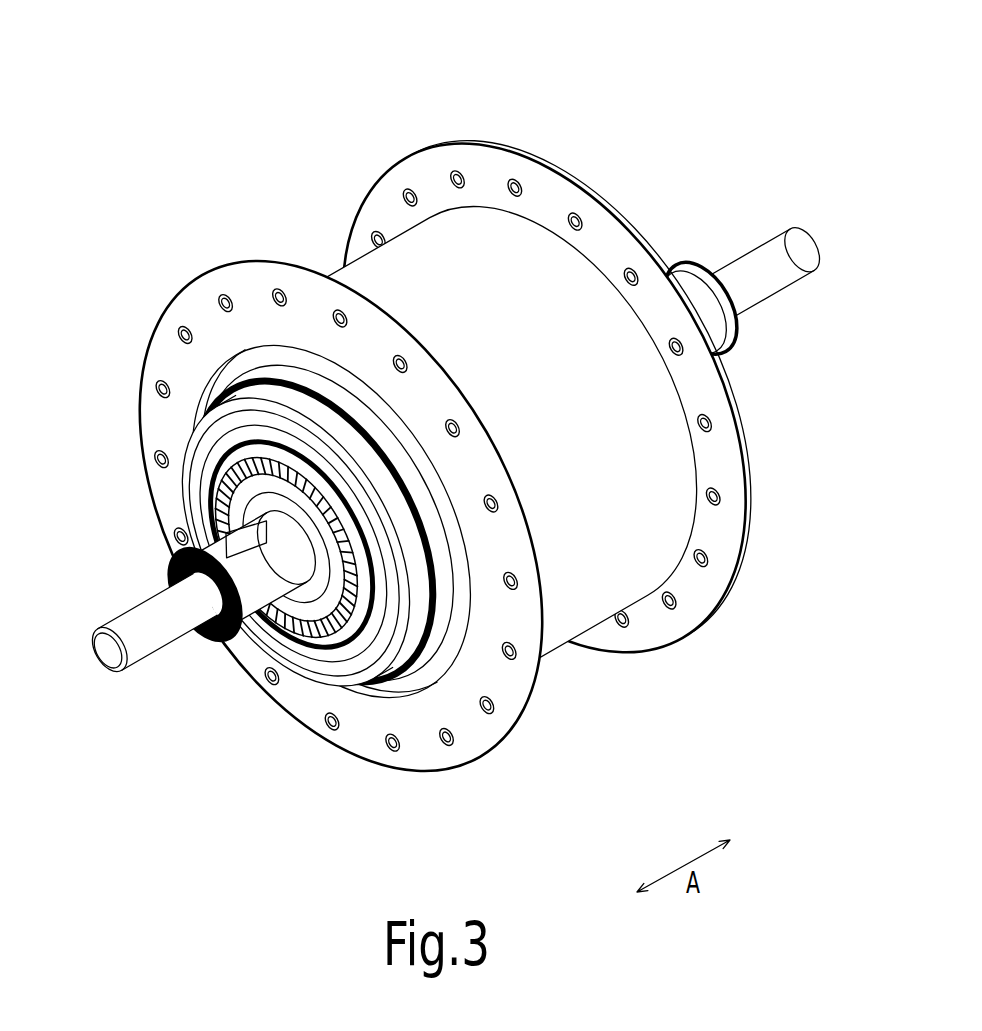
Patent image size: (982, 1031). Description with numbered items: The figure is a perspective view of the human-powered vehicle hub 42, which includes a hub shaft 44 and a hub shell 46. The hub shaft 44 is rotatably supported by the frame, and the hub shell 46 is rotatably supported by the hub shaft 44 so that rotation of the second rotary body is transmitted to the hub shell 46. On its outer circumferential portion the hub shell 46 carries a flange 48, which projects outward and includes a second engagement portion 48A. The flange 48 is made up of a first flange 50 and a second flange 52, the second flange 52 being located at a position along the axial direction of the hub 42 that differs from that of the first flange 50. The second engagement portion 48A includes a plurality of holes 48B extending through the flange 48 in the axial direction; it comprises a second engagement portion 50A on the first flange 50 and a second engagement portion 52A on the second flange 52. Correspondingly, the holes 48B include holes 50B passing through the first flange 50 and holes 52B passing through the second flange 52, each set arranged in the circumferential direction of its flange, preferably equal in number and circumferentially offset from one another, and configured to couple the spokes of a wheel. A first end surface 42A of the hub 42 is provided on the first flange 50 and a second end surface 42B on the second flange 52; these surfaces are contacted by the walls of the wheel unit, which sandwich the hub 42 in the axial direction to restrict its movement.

The hub 42 is at (475, 438).
The first end surface 42A is at (576, 397).
The second end surface 42B is at (358, 525).
The hub shaft 44 is at (105, 653).
The hub shell 46 is at (392, 248).
The flange 48 is at (475, 465).
The second engagement portion 48A is at (336, 515).
The holes 48B is at (335, 524).
The first flange 50 is at (576, 397).
The second engagement portion 50A is at (543, 402).
The holes 50B is at (717, 592).
The second flange 52 is at (358, 525).
The second engagement portion 52A is at (336, 515).
The holes 52B is at (362, 742).